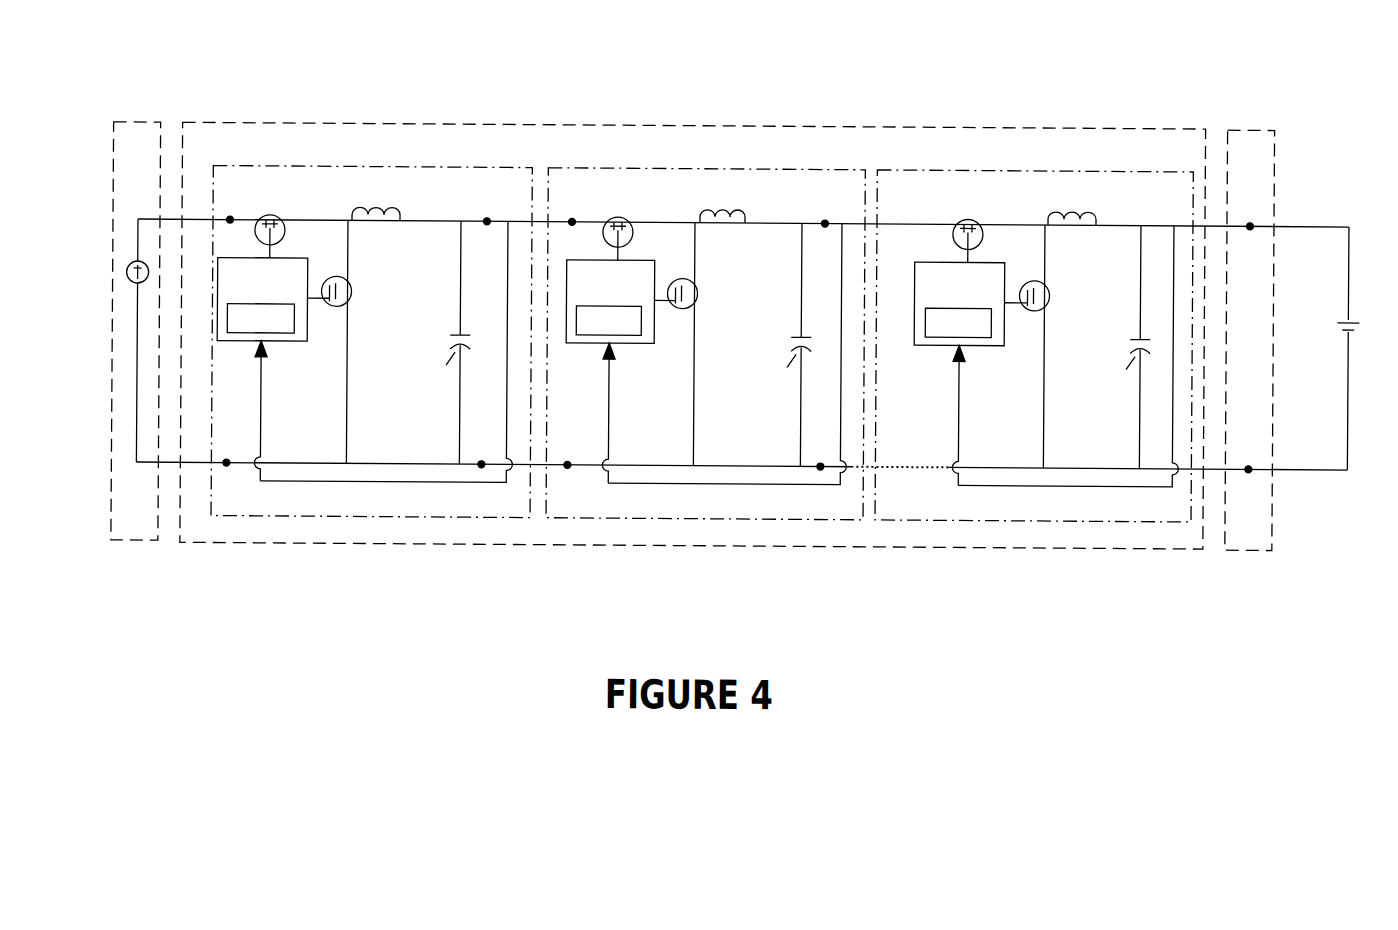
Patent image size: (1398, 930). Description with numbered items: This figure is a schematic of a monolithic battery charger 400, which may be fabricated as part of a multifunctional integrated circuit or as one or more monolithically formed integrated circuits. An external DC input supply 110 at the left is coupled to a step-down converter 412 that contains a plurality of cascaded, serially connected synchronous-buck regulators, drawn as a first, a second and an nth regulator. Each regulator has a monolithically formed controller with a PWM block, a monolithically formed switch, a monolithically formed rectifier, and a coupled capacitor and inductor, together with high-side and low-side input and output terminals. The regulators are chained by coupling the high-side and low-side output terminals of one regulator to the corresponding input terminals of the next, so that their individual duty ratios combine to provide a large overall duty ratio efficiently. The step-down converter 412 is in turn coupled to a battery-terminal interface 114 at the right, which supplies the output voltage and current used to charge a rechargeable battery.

The monolithic battery charger 400 is at (698, 68).
The external DC input supply 110 is at (140, 122).
The step-down converter 412 is at (695, 125).
The battery-terminal interface 114 is at (1252, 123).